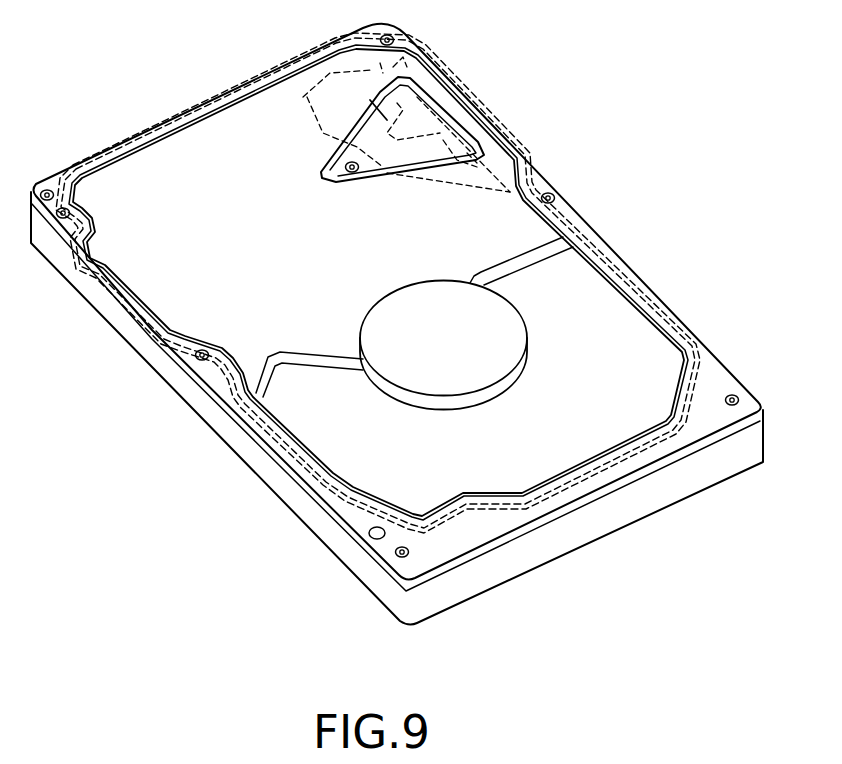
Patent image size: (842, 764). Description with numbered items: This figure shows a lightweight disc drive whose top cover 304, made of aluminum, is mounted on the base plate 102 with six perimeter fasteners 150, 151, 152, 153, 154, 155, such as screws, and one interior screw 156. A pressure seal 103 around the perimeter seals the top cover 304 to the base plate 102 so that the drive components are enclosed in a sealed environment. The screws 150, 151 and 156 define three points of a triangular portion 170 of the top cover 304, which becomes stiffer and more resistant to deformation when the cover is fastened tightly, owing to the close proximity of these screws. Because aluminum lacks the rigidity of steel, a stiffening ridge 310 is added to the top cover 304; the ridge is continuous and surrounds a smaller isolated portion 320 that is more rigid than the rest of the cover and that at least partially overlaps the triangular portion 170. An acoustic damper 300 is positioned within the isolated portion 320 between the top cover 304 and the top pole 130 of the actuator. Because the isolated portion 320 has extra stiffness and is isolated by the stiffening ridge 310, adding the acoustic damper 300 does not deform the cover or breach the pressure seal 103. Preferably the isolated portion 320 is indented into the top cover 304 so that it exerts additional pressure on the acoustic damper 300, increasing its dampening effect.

The base plate 102 is at (397, 339).
The pressure seal 103 is at (655, 487).
The top pole 130 is at (318, 108).
The perimeter fastener 150 is at (390, 40).
The perimeter fastener 151 is at (552, 198).
The perimeter fastener 152 is at (733, 397).
The perimeter fastener 153 is at (397, 552).
The perimeter fastener 154 is at (197, 355).
The perimeter fastener 155 is at (47, 195).
The interior screw 156 is at (353, 170).
The triangular portion 170 is at (548, 165).
The acoustic damper 300 is at (403, 275).
The top cover 304 is at (633, 333).
The stiffening ridge 310 is at (433, 100).
The isolated portion 320 is at (428, 152).